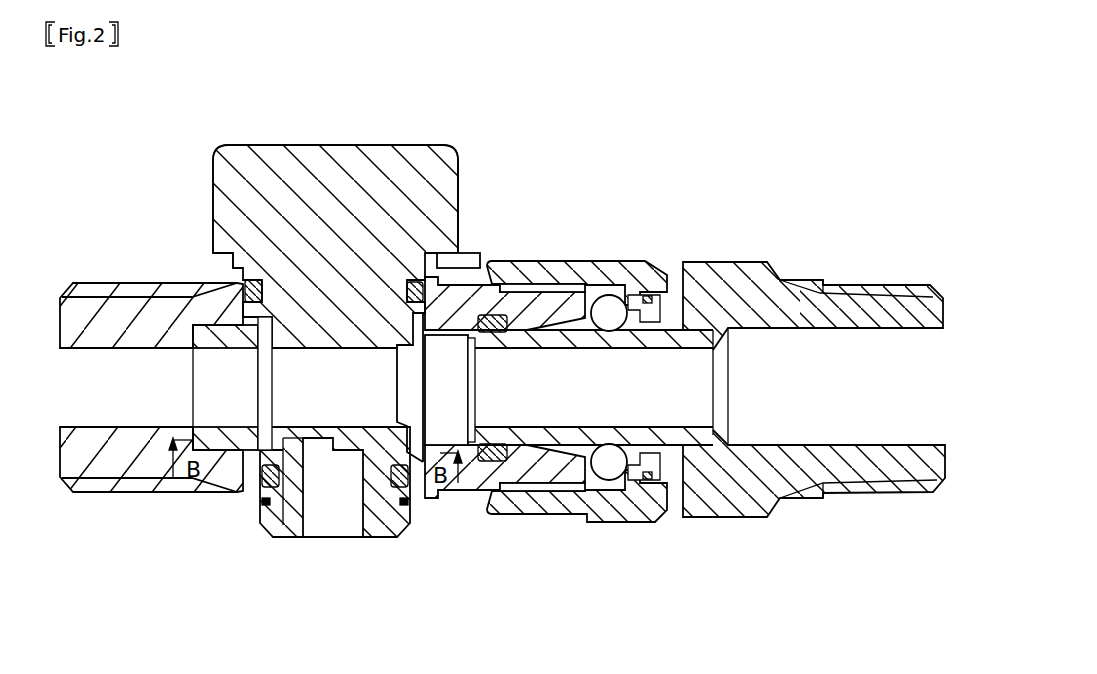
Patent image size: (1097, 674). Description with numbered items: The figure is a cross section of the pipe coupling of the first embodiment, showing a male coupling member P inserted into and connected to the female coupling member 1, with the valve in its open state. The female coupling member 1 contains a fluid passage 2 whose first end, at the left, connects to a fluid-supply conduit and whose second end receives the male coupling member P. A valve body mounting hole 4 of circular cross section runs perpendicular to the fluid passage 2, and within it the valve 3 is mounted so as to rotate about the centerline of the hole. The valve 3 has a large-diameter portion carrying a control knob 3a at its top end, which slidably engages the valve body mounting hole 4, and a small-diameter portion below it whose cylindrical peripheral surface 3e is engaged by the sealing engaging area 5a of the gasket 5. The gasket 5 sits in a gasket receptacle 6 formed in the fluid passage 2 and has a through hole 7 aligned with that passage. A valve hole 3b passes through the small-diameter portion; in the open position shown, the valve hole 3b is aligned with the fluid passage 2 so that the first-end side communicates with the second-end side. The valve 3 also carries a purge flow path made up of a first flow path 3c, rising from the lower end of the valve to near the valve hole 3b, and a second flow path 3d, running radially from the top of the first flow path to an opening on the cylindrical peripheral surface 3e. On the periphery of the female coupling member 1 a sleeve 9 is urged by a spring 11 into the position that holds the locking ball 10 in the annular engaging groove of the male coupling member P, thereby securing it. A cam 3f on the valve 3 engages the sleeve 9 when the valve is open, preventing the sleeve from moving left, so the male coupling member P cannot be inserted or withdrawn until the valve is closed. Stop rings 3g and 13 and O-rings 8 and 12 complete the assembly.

The female coupling member 1 is at (198, 233).
The fluid passage 2 is at (105, 403).
The valve 3 is at (390, 165).
The control knob 3a is at (460, 195).
The valve hole 3b is at (278, 397).
The first flow path 3c is at (330, 522).
The second flow path 3d is at (280, 522).
The cylindrical peripheral surface 3e is at (282, 348).
The cam 3f is at (468, 262).
The stop ring 3g is at (398, 505).
The valve body mounting hole 4 is at (423, 387).
The gasket 5 is at (188, 346).
The sealing engaging area 5a is at (233, 324).
The gasket receptacle 6 is at (205, 347).
The through hole 7 is at (232, 350).
The O-ring 8 is at (432, 298).
The sleeve 9 is at (627, 268).
The locking ball 10 is at (620, 315).
The spring 11 is at (573, 284).
The O-ring 12 is at (482, 460).
The stop ring 13 is at (647, 500).
The male coupling member P is at (745, 265).